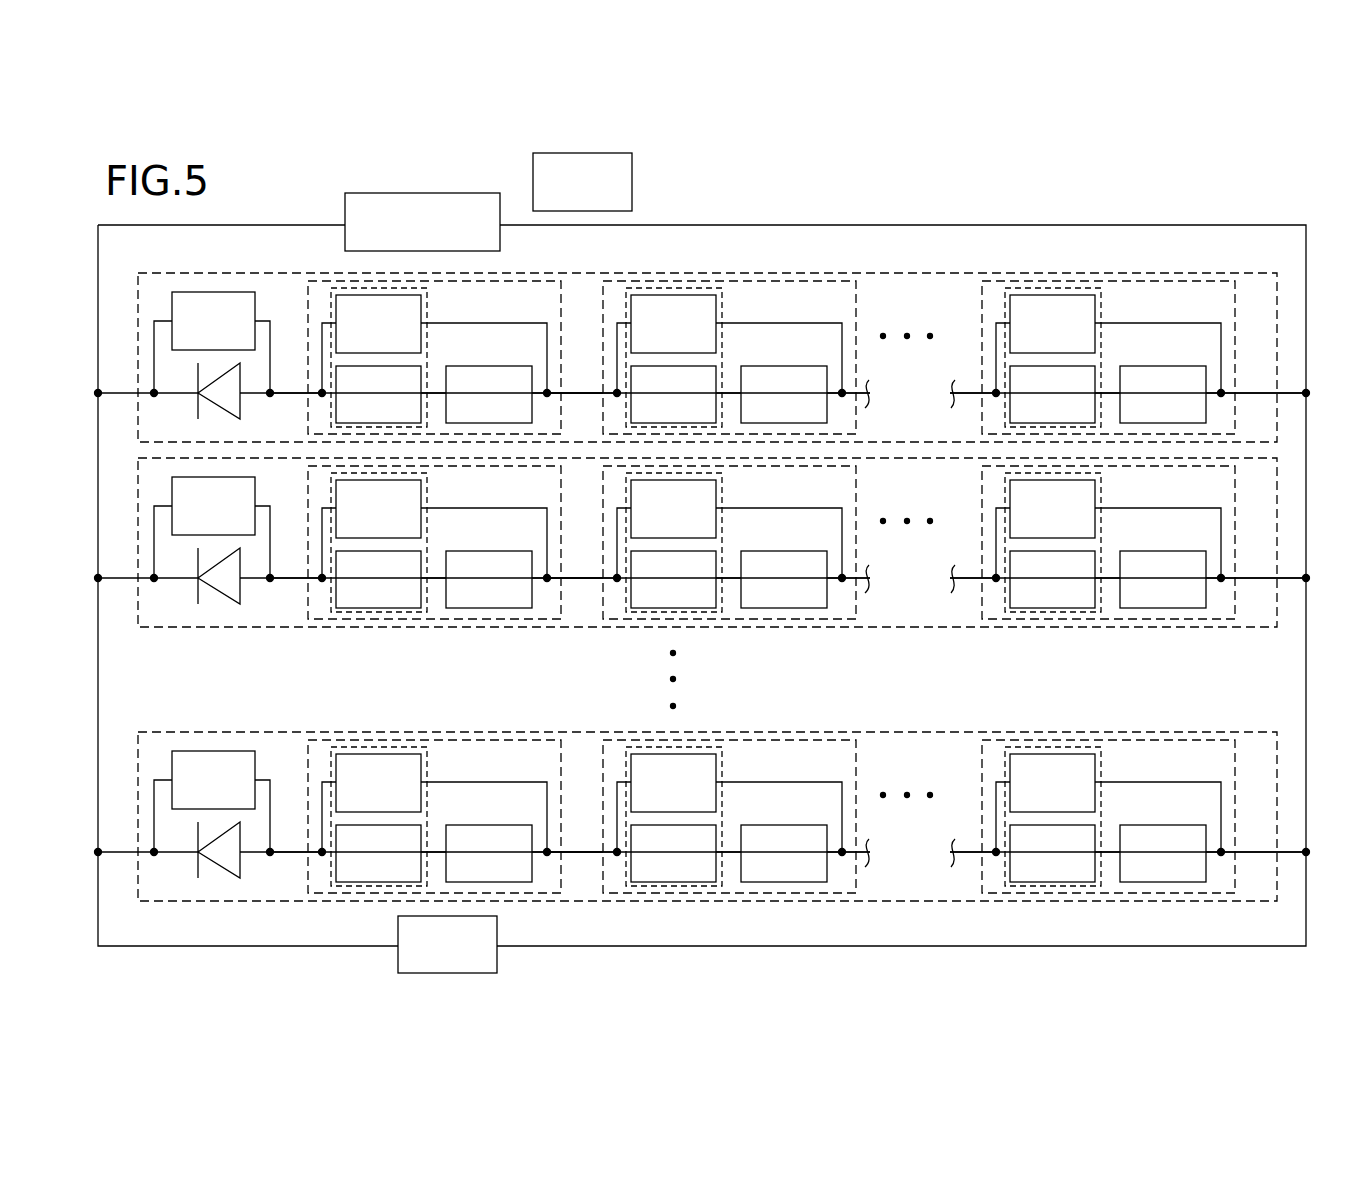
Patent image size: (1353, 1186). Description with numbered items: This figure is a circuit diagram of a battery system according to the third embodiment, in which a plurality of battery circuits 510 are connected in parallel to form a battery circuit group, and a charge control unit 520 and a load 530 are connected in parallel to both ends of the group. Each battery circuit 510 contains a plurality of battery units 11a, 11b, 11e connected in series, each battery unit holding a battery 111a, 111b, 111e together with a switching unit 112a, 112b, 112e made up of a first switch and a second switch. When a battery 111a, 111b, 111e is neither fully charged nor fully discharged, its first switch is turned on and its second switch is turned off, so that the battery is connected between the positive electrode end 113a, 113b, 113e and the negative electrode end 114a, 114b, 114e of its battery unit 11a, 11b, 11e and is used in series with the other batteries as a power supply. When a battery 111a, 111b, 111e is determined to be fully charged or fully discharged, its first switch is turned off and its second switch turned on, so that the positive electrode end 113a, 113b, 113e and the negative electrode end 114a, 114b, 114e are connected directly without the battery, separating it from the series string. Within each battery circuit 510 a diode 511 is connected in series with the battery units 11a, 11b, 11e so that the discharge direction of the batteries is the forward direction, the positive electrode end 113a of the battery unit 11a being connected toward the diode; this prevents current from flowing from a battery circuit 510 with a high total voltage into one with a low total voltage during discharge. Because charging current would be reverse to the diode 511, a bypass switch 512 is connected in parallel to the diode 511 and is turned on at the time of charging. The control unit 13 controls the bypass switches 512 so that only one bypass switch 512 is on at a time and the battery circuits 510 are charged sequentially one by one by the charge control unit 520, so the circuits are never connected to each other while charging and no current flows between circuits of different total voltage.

The battery unit 11a is at (512, 282).
The battery unit 11b is at (730, 573).
The battery unit 11e is at (1110, 573).
The control unit 13 is at (582, 182).
The battery 111a is at (489, 624).
The battery 111b is at (784, 624).
The battery 111e is at (1163, 624).
The switching unit 112a is at (427, 316).
The switching unit 112b is at (706, 552).
The switching unit 112e is at (1085, 552).
The positive electrode end 113a is at (307, 388).
The positive electrode end 113b is at (601, 388).
The positive electrode end 113e is at (978, 388).
The negative electrode end 114a is at (563, 398).
The negative electrode end 114b is at (857, 398).
The negative electrode end 114e is at (1239, 398).
The battery circuit 510 is at (1028, 460).
The diode 511 is at (250, 408).
The bypass switch 512 is at (212, 572).
The charge control unit 520 is at (422, 222).
The load 530 is at (447, 944).